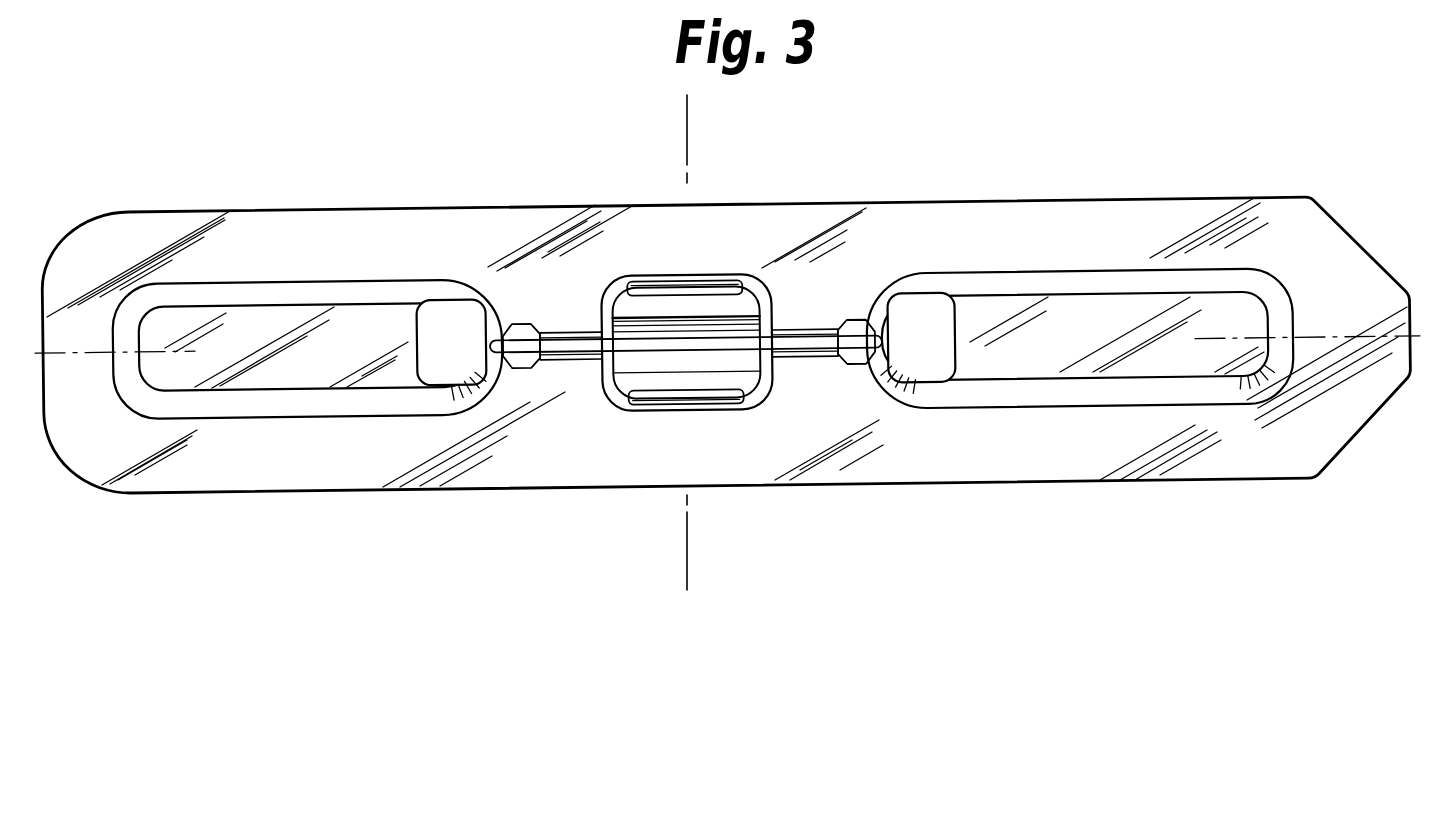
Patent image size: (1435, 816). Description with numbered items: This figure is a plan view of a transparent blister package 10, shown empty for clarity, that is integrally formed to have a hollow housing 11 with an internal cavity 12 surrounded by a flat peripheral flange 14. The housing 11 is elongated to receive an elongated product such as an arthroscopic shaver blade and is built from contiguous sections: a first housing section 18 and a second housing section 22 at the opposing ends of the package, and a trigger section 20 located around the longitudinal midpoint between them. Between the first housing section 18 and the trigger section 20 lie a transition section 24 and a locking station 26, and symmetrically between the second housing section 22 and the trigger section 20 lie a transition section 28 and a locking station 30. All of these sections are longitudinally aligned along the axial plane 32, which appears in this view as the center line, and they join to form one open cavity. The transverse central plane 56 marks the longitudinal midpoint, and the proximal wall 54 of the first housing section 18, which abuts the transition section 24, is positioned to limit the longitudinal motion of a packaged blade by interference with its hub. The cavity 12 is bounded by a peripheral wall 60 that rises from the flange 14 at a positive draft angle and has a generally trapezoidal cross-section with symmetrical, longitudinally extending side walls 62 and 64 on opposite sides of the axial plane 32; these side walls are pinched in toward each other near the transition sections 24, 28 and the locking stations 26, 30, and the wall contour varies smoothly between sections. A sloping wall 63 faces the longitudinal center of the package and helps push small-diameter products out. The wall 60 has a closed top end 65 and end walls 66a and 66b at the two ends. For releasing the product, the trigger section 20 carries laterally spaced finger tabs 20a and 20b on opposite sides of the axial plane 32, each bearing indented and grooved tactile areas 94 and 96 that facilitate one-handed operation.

The blister package 10 is at (662, 207).
The hollow housing 11 is at (474, 316).
The internal cavity 12 is at (180, 234).
The peripheral flange 14 is at (726, 317).
The first housing section 18 is at (307, 373).
The trigger section 20 is at (704, 358).
The finger tab 20a is at (669, 462).
The finger tab 20b is at (702, 220).
The second housing section 22 is at (1080, 357).
The transition section 24 is at (528, 319).
The locking station 26 is at (567, 251).
The transition section 28 is at (855, 315).
The locking station 30 is at (834, 243).
The axial plane 32 is at (727, 315).
The proximal wall 54 is at (449, 410).
The transverse central plane 56 is at (716, 342).
The peripheral wall 60 is at (1271, 404).
The side wall 62 is at (900, 469).
The sloping wall 63 is at (446, 305).
The side wall 64 is at (899, 206).
The closed top end 65 is at (282, 429).
The end wall 66a is at (118, 451).
The end wall 66b is at (1327, 391).
The tactile area 94 is at (706, 467).
The tactile area 96 is at (674, 213).